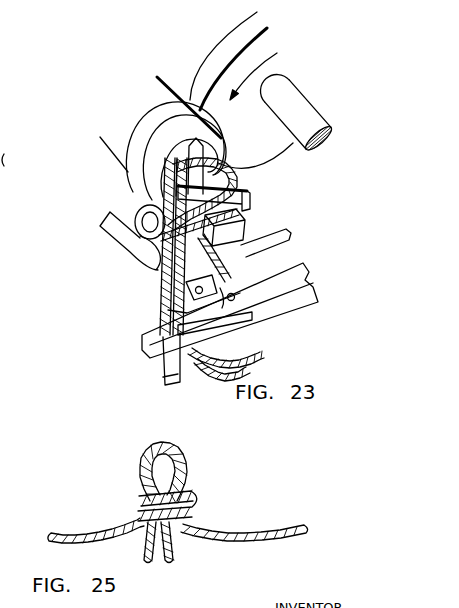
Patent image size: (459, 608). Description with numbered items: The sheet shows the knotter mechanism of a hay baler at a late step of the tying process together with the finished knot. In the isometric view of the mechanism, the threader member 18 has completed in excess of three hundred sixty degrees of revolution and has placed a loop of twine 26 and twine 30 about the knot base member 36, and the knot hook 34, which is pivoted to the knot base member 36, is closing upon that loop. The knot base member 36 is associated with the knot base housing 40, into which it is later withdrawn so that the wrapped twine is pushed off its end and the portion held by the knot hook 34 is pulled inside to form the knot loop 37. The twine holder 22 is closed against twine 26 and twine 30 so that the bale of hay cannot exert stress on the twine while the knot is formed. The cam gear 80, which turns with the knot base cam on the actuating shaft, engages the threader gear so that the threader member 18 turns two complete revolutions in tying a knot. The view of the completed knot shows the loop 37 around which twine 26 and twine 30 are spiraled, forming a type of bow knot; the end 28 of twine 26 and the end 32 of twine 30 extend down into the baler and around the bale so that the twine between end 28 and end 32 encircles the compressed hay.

In FIG. 23, the cam gear 80 is at (215, 62).
In FIG. 23, the knot base housing 40 is at (120, 133).
In FIG. 23, the knot hook 34 is at (274, 194).
In FIG. 23, the knot base member 36 is at (243, 238).
In FIG. 23, the threader member 18 is at (145, 262).
In FIG. 23, the twine holder 22 is at (160, 369).
In FIG. 25, the loop 37 is at (185, 470).
In FIG. 25, the end of twine 32 is at (49, 542).
In FIG. 25, the twine 30 is at (146, 545).
In FIG. 25, the twine 26 is at (171, 546).
In FIG. 25, the end of twine 28 is at (306, 533).